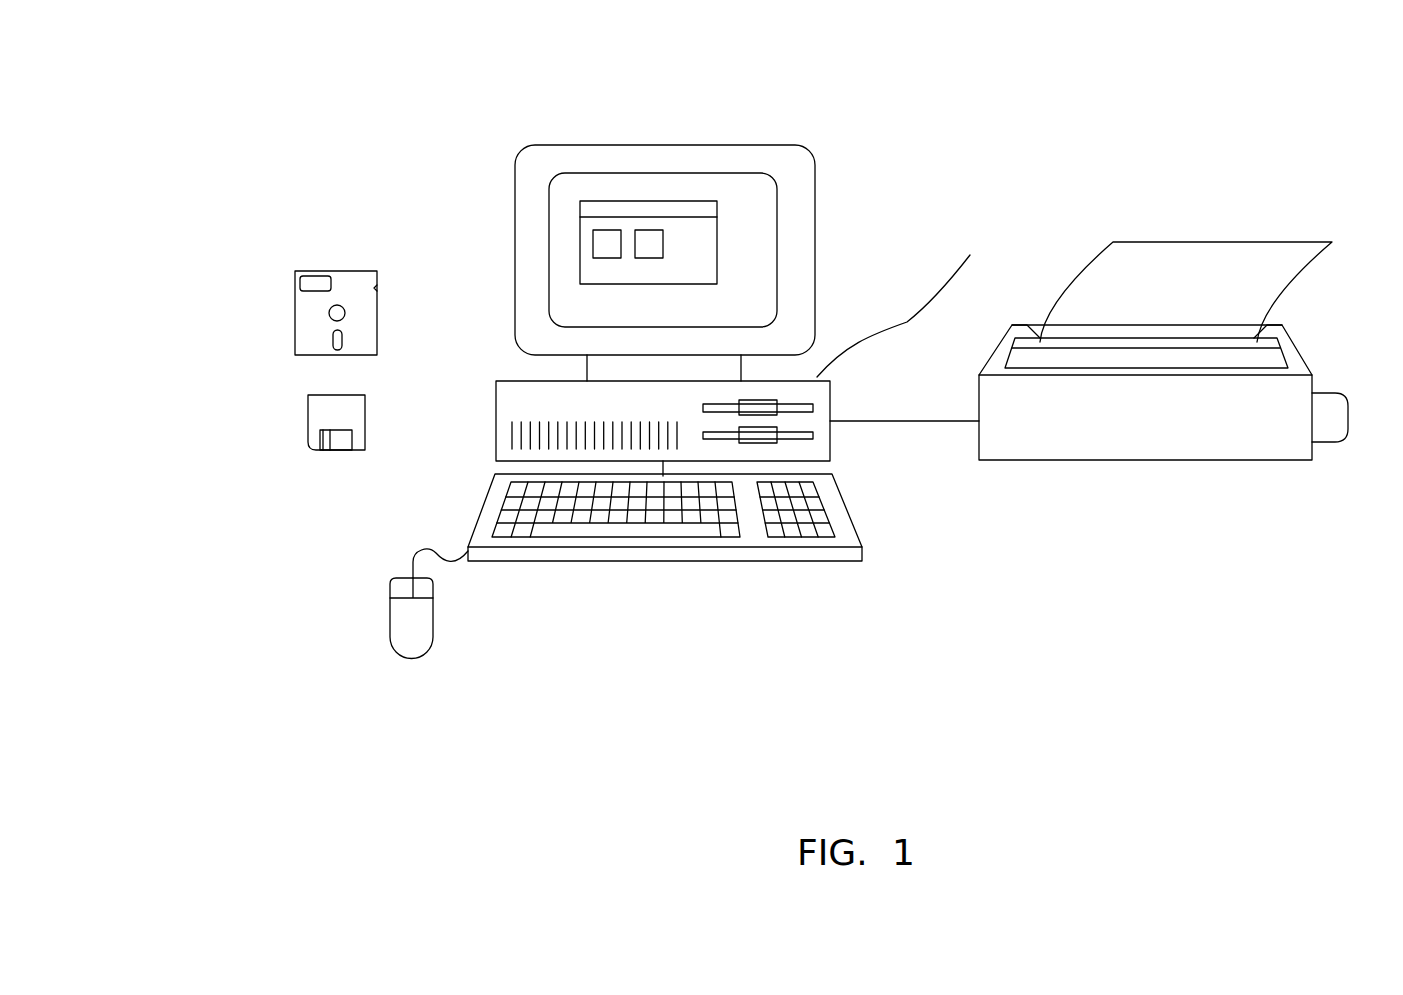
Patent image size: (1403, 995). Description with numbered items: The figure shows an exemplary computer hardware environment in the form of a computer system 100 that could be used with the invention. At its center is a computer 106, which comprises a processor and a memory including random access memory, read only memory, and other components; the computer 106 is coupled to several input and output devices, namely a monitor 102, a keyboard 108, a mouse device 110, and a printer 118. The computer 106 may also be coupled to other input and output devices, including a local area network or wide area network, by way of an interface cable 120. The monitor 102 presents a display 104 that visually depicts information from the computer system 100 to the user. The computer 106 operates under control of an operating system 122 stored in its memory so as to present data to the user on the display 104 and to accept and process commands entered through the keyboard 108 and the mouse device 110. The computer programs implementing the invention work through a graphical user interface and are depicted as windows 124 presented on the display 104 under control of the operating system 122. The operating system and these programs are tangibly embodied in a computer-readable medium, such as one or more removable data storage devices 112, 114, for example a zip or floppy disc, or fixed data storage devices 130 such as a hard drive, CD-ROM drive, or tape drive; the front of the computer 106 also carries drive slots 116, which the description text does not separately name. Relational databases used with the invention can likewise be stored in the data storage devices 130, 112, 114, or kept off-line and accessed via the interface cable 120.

The computer system 100 is at (710, 110).
The monitor 102 is at (515, 268).
The display 104 is at (548, 230).
The computer 106 is at (497, 427).
The keyboard 108 is at (650, 560).
The mouse device 110 is at (393, 643).
The removable data storage device 112 is at (297, 314).
The removable data storage device 114 is at (308, 413).
The disk drives 116 is at (813, 439).
The printer 118 is at (1130, 460).
The interface cable 120 is at (907, 322).
The operating system 122 is at (563, 195).
The windows 124 is at (627, 202).
The fixed data storage device 130 is at (537, 397).